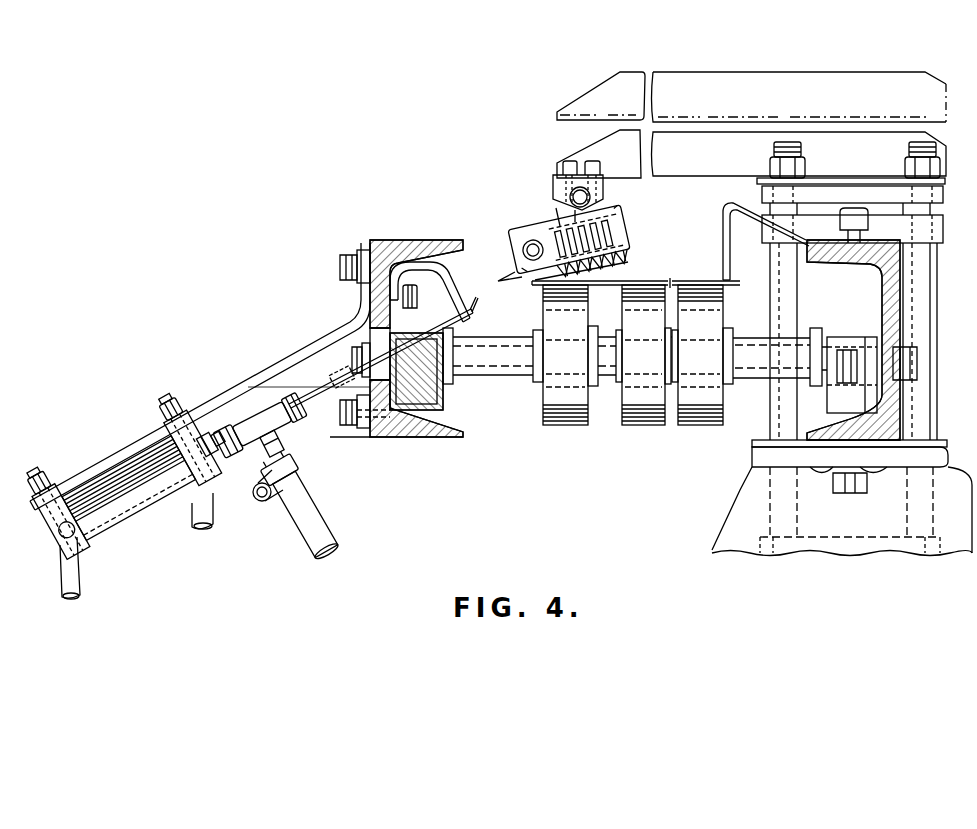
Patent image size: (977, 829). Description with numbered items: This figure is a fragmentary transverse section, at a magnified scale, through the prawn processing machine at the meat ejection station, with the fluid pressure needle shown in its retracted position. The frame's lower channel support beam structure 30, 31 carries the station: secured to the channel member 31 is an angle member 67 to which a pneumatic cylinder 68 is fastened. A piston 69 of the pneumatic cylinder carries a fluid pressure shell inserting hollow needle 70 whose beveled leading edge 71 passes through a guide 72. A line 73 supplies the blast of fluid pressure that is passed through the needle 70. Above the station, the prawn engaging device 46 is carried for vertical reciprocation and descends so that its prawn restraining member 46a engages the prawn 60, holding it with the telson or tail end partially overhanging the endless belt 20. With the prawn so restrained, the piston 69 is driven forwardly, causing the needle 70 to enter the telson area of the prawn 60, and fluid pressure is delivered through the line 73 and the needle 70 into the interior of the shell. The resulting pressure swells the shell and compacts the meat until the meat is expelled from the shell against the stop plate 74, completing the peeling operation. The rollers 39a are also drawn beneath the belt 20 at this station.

The prawn engaging device 46 is at (608, 102).
The prawn restraining member 46a is at (627, 224).
The prawn 60 is at (633, 273).
The stop plate 74 is at (722, 243).
The endless belt 20 is at (738, 284).
The lower channel support beam structure 30 is at (887, 292).
The rollers 39a is at (697, 427).
The channel member 31 is at (387, 240).
The guide 72 is at (438, 278).
The beveled leading edge 71 is at (472, 310).
The angle member 67 is at (246, 380).
The fluid pressure shell inserting hollow needle 70 is at (306, 404).
The piston 69 is at (213, 462).
The line 73 is at (323, 531).
The pneumatic cylinder 68 is at (125, 512).